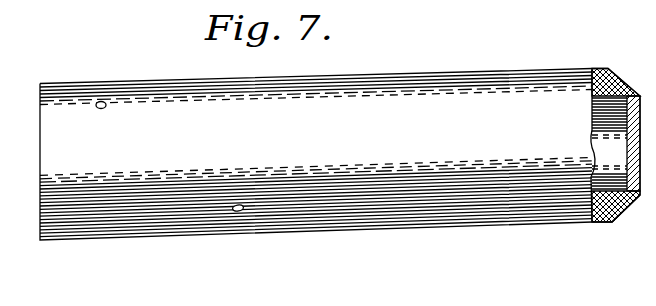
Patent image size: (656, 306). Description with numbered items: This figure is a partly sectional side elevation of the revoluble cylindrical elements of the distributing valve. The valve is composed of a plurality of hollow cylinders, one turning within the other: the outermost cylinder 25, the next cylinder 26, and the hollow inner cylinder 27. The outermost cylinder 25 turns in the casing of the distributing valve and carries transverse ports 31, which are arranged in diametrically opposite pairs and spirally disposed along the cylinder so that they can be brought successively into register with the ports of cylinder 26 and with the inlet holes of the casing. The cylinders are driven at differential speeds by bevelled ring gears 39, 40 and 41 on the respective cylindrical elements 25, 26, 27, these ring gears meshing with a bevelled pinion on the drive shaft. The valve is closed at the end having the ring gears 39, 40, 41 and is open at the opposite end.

The transverse ports 31 is at (101, 108).
The hollow inner cylinder 27 is at (586, 222).
The bevelled ring gear 40 is at (619, 88).
The bevelled ring gear 39 is at (608, 67).
The bevelled ring gear 41 is at (633, 93).
The hollow cylinder 26 is at (598, 223).
The outermost cylinder 25 is at (609, 225).